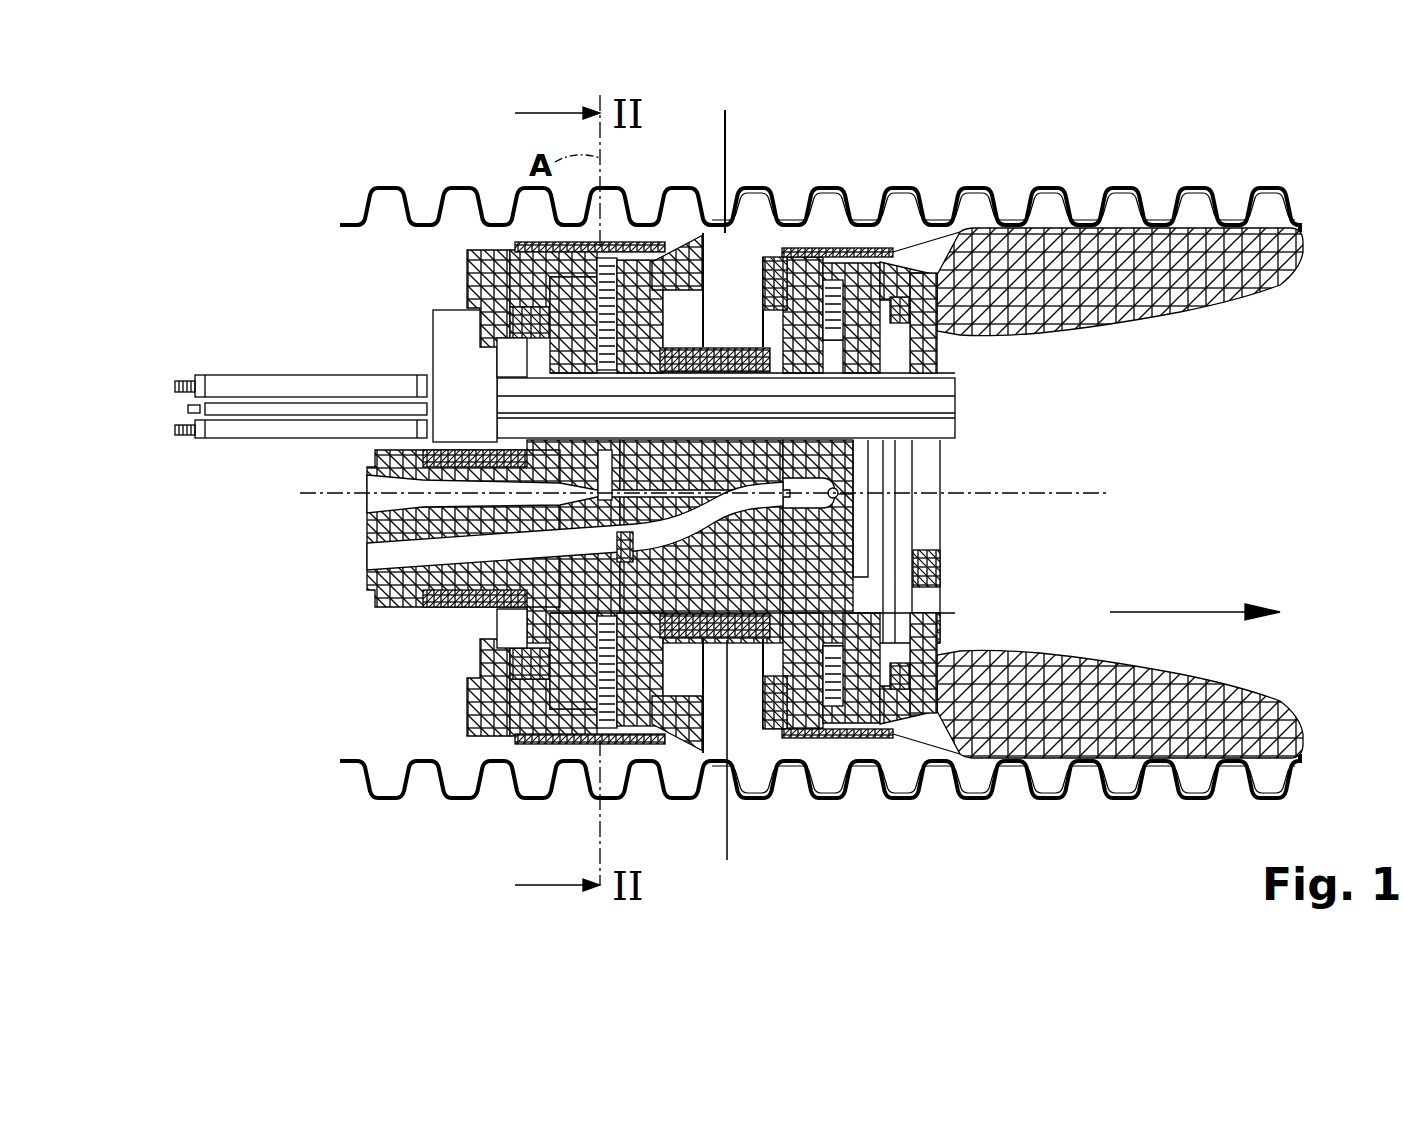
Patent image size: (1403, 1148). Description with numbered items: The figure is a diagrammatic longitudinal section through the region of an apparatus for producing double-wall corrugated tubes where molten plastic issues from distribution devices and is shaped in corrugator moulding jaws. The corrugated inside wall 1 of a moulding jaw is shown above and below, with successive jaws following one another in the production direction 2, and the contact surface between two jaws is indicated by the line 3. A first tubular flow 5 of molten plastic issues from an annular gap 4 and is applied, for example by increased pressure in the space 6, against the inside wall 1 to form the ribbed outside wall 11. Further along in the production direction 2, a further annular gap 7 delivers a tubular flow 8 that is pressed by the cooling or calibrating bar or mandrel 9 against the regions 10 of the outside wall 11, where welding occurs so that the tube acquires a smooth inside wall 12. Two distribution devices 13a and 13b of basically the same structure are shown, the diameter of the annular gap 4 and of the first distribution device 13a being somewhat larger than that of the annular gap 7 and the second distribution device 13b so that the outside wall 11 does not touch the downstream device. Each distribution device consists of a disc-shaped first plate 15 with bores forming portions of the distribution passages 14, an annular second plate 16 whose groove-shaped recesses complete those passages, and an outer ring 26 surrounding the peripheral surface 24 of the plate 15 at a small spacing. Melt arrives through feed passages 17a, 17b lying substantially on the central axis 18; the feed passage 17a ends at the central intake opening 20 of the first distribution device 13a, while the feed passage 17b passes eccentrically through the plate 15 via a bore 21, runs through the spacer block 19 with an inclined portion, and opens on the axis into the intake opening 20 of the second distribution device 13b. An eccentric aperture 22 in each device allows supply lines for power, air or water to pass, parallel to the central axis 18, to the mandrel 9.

The inside wall of corrugator moulding jaw 1 is at (378, 188).
The production direction 2 is at (1197, 612).
The line indicating contact surface of two moulding jaws 3 is at (725, 125).
The annular gap 4 is at (677, 245).
The first tubular flow 5 is at (718, 245).
The space 6 is at (766, 255).
The further annular gap 7 is at (890, 262).
The tubular flow 8 is at (972, 232).
The bar or mandrel 9 is at (1230, 287).
The regions of the outside wall 10 is at (1226, 200).
The outside wall 11 is at (1047, 193).
The inside wall 12 is at (1118, 200).
The first distribution device 13a is at (553, 765).
The second distribution device 13b is at (841, 760).
The distribution passages 14 is at (605, 440).
The first plate 15 is at (570, 667).
The second plate 16 is at (623, 715).
The first feed passage 17a is at (367, 508).
The second feed passage 17b is at (367, 567).
The central axis 18 is at (305, 492).
The spacer block 19 is at (751, 751).
The intake opening 20 is at (860, 478).
The bore 21 is at (530, 610).
The aperture 22 is at (232, 385).
The peripheral surface 24 is at (627, 748).
The outer ring 26 is at (530, 277).